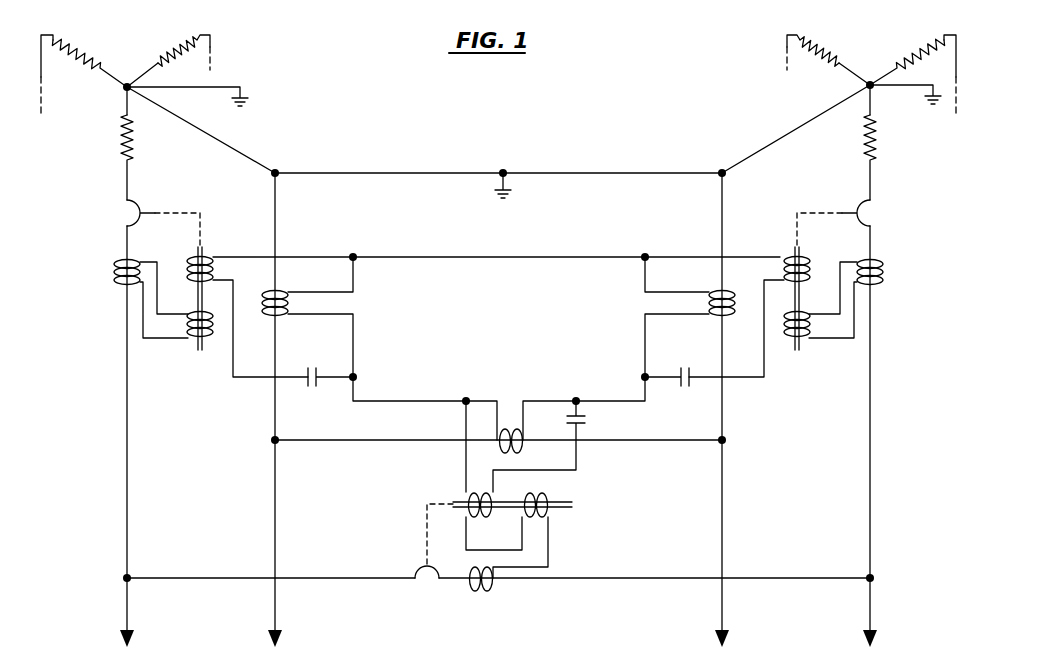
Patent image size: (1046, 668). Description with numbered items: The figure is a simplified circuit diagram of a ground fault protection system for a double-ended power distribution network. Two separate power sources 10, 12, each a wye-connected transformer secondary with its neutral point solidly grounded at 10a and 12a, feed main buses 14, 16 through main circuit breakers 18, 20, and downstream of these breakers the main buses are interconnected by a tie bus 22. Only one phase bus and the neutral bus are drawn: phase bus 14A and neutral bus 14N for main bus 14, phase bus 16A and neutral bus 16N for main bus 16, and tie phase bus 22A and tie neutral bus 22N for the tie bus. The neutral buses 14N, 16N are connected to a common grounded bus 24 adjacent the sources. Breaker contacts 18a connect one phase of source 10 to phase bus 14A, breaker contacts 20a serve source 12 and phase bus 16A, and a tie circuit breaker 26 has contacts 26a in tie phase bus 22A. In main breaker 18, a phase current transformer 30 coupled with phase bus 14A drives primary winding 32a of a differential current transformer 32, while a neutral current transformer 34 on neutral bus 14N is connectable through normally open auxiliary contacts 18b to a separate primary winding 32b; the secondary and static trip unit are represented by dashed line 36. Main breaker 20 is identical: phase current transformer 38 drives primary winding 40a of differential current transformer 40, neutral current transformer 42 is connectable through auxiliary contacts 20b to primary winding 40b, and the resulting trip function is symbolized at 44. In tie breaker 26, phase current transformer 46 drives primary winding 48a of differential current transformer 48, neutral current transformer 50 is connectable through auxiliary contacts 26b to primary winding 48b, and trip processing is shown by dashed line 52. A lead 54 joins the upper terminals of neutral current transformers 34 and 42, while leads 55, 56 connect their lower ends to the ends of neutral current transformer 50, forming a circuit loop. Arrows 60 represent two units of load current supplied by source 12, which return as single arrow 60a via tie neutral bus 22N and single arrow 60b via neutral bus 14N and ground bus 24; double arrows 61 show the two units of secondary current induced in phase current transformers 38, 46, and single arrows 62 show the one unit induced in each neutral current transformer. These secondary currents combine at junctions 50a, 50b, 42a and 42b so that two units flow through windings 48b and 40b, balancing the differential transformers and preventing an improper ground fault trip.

The power source 10 is at (141, 56).
The neutral point ground 10a is at (246, 97).
The power source 12 is at (896, 55).
The neutral point ground 12a is at (928, 102).
The main bus 14 is at (214, 476).
The phase bus 14A is at (126, 384).
The neutral bus 14N is at (277, 216).
The main bus 16 is at (817, 476).
The phase bus 16A is at (872, 382).
The neutral bus 16N is at (720, 216).
The main circuit breaker 18 is at (104, 256).
The main breaker contacts 18a is at (152, 196).
The circuit breaker auxiliary contacts 18b is at (313, 367).
The main circuit breaker 20 is at (895, 263).
The breaker contacts 20a is at (858, 204).
The circuit breaker auxiliary contacts 20b is at (688, 390).
The tie bus 22 is at (684, 526).
The tie phase bus 22A is at (605, 580).
The tie neutral bus 22N is at (346, 444).
The common grounded bus 24 is at (385, 173).
The tie circuit breaker 26 is at (505, 590).
The tie breaker contacts 26a is at (416, 574).
The circuit breaker auxiliary contacts 26b is at (588, 422).
The phase current transformer 30 is at (113, 285).
The differential current transformer 32 is at (196, 348).
The primary winding 32a is at (212, 340).
The primary winding 32b is at (196, 257).
The neutral current transformer 34 is at (266, 318).
The dashed line 36 is at (167, 212).
The phase current transformer 38 is at (884, 256).
The differential current transformer 40 is at (795, 352).
The primary winding 40a is at (810, 338).
The primary winding 40b is at (801, 252).
The neutral current transformer 42 is at (730, 316).
The junction 42a is at (647, 373).
The junction 42b is at (644, 260).
The ground fault trip function representation 44 is at (820, 212).
The phase current transformer 46 is at (476, 591).
The differential current transformer 48 is at (573, 505).
The primary winding 48a is at (552, 493).
The primary winding 48b is at (478, 518).
The neutral current transformer 50 is at (524, 446).
The junction 50a is at (472, 425).
The junction 50b is at (577, 398).
The dashed line 52 is at (427, 533).
The lead 54 is at (499, 258).
The lead 55 is at (359, 379).
The lead 56 is at (593, 395).
The current arrows 60 is at (136, 590).
The single arrow 60a is at (340, 435).
The single arrow 60b is at (640, 166).
The double arrow 61 is at (495, 553).
The single arrow 62 is at (292, 296).